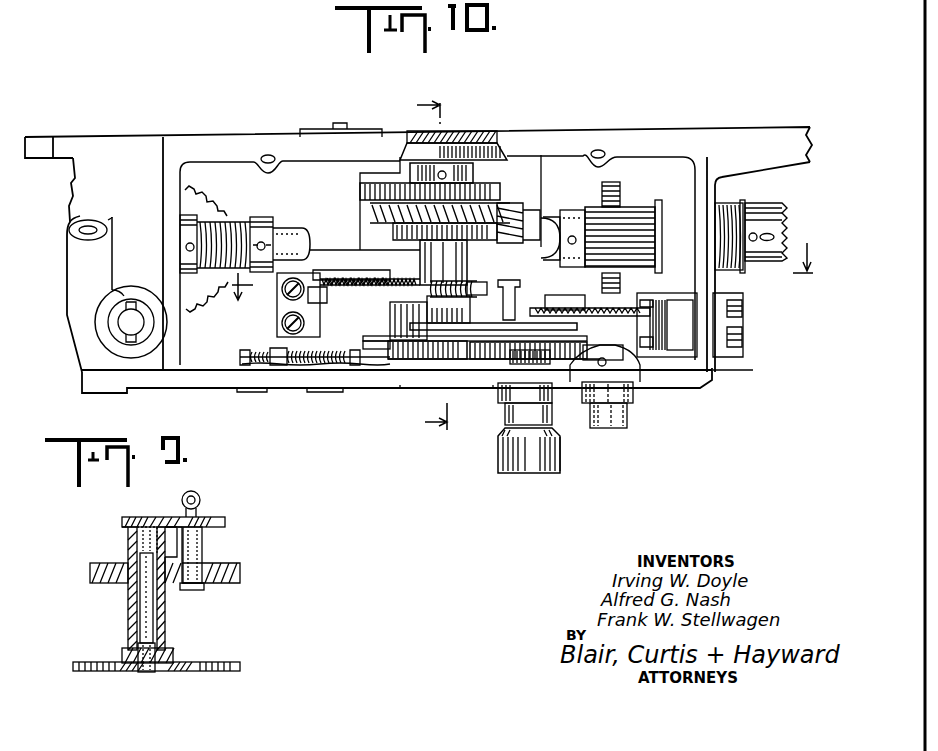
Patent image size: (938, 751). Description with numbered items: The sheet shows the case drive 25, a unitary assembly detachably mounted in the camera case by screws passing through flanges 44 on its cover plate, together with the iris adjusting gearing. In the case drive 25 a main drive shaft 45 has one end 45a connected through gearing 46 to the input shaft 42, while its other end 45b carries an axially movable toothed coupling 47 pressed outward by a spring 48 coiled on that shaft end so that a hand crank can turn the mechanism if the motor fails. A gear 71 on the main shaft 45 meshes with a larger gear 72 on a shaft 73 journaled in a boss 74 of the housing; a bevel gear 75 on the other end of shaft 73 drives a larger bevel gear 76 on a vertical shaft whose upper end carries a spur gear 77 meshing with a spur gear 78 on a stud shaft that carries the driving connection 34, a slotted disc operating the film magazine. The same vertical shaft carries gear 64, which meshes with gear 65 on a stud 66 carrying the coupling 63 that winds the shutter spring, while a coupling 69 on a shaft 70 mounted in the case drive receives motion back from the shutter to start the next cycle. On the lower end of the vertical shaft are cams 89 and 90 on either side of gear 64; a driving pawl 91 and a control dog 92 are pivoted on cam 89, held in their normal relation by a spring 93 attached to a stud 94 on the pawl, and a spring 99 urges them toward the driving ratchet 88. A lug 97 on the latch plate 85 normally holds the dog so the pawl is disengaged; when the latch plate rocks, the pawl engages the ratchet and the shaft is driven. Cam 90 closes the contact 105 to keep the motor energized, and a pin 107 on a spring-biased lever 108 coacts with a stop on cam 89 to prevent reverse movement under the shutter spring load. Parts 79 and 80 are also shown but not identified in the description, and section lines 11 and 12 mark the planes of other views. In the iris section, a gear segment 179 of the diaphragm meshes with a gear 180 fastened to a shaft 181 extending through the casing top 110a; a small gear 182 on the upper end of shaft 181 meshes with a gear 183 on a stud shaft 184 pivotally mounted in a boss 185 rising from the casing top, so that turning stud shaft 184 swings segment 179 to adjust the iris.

In FIG. 10, the case drive 25 is at (210, 113).
In FIG. 10, the flanges 44 is at (38, 143).
In FIG. 10, the input shaft 42 is at (129, 323).
In FIG. 10, the driving connection 34 is at (312, 128).
In FIG. 10, the boss 74 is at (571, 162).
In FIG. 10, the section line 12 is at (439, 264).
In FIG. 10, the section line 11 is at (532, 282).
In FIG. 10, the gearing 46 is at (190, 202).
In FIG. 10, the end of main drive shaft 45a is at (240, 220).
In FIG. 10, the main drive shaft 45 is at (287, 228).
In FIG. 10, the spur gear 78 is at (361, 190).
In FIG. 10, the spur gear 77 is at (481, 188).
In FIG. 10, the bevel gear 76 is at (505, 208).
In FIG. 10, the bevel gear 75 is at (503, 250).
In FIG. 10, the shaft 73 is at (540, 222).
In FIG. 10, the spring 93 is at (453, 283).
In FIG. 10, the stud 94 is at (422, 263).
In FIG. 10, the control dog 92 is at (492, 295).
In FIG. 10, the spring 99 is at (511, 288).
In FIG. 10, the lug 97 is at (448, 310).
In FIG. 10, the latch plate 85 is at (521, 326).
In FIG. 10, the plate 80 is at (574, 294).
In FIG. 10, the rack 79 is at (579, 313).
In FIG. 10, the driving ratchet 88 is at (420, 310).
In FIG. 10, the driving pawl 91 is at (413, 310).
In FIG. 10, the contact 105 is at (358, 321).
In FIG. 10, the cam 89 is at (391, 338).
In FIG. 10, the cam 90 is at (422, 363).
In FIG. 10, the gear 64 is at (453, 359).
In FIG. 10, the spring-biased lever 108 is at (372, 370).
In FIG. 10, the pin 107 is at (383, 373).
In FIG. 10, the gear 71 is at (631, 218).
In FIG. 10, the gear 72 is at (613, 182).
In FIG. 10, the end of main drive shaft 45b is at (722, 216).
In FIG. 10, the toothed coupling 47 is at (768, 217).
In FIG. 10, the spring 48 is at (733, 262).
In FIG. 10, the shaft 70 is at (640, 383).
In FIG. 10, the coupling 69 is at (623, 427).
In FIG. 10, the gear 65 is at (564, 365).
In FIG. 10, the stud 66 is at (498, 399).
In FIG. 10, the coupling 63 is at (507, 452).
In FIG. 9, the gear 183 is at (226, 521).
In FIG. 9, the small gear 182 is at (122, 522).
In FIG. 9, the shaft 181 is at (145, 611).
In FIG. 9, the mounting plate 110a is at (96, 572).
In FIG. 9, the boss 185 is at (205, 540).
In FIG. 9, the stud shaft 184 is at (200, 500).
In FIG. 9, the gear 180 is at (120, 671).
In FIG. 9, the gear segment 179 is at (214, 672).